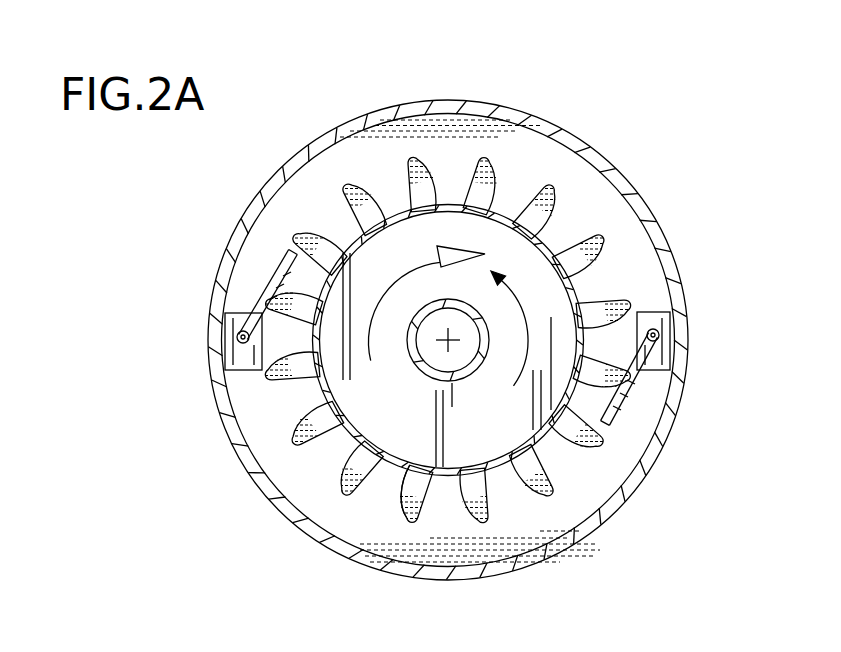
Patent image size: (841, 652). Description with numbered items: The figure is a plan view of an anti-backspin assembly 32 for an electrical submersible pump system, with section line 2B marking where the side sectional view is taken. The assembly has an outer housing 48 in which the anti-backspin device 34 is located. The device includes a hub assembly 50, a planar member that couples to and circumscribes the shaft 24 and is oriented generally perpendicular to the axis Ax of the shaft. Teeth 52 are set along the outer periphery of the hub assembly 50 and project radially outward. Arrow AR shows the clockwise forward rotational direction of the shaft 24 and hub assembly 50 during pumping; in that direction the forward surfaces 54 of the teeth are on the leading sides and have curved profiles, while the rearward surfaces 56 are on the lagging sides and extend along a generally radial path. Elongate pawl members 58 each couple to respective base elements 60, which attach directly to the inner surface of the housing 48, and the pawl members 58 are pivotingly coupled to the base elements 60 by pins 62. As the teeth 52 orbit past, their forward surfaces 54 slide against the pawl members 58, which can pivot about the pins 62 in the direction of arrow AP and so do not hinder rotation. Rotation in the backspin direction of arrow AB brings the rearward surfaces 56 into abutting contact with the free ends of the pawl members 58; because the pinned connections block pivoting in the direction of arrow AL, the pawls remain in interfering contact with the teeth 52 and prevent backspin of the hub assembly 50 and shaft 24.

The shaft 24 is at (424, 367).
The anti-backspin assembly 32 is at (450, 293).
The anti-backspin device 34 is at (459, 148).
The outer housing 48 is at (612, 163).
The hub assembly 50 is at (318, 377).
The teeth 52 is at (575, 482).
The forward surfaces 54 is at (397, 503).
The rearward surfaces 56 is at (430, 505).
The pawl members 58 is at (650, 394).
The base elements 60 is at (683, 330).
The pins 62 is at (657, 318).
The arrow A_P AP is at (284, 259).
The arrow A_R AR is at (415, 255).
The axis A_X Ax is at (452, 333).
The arrow A_B AB is at (522, 382).
The arrow A_L AL is at (626, 432).
The section line 2B- 2B is at (172, 339).